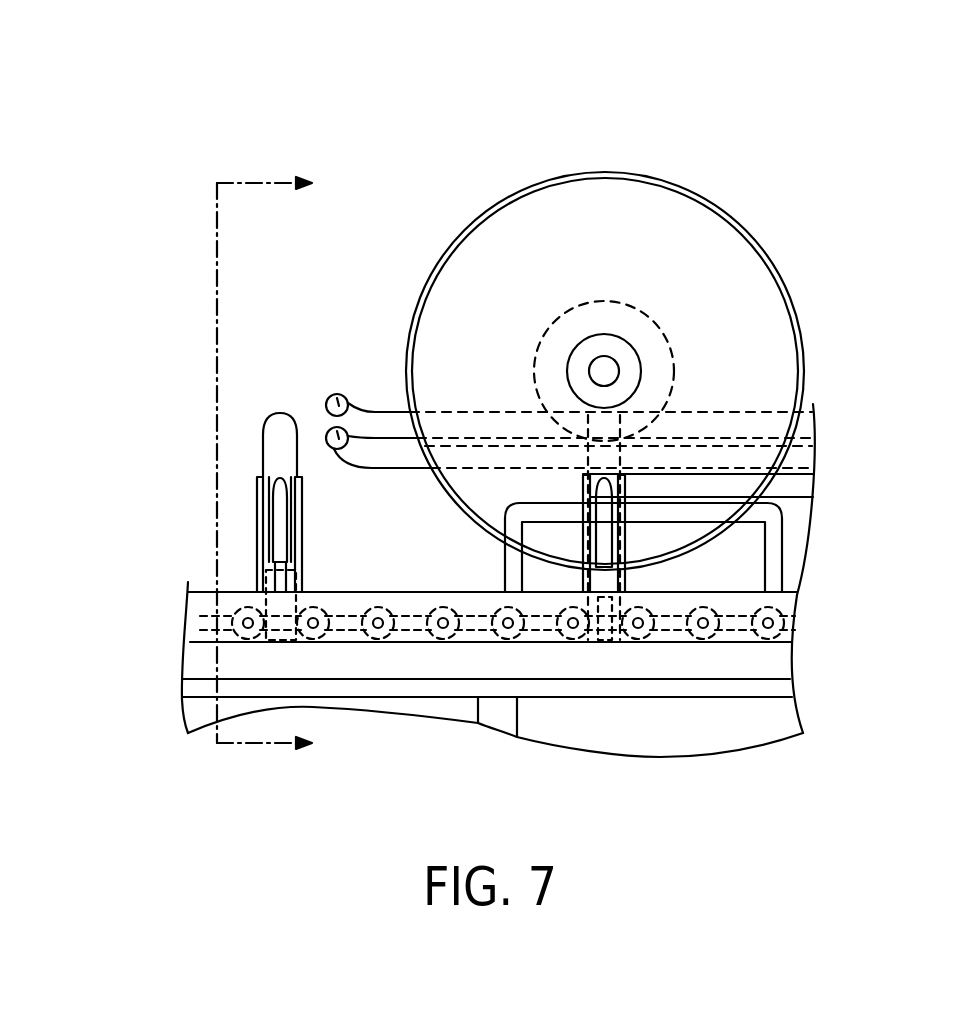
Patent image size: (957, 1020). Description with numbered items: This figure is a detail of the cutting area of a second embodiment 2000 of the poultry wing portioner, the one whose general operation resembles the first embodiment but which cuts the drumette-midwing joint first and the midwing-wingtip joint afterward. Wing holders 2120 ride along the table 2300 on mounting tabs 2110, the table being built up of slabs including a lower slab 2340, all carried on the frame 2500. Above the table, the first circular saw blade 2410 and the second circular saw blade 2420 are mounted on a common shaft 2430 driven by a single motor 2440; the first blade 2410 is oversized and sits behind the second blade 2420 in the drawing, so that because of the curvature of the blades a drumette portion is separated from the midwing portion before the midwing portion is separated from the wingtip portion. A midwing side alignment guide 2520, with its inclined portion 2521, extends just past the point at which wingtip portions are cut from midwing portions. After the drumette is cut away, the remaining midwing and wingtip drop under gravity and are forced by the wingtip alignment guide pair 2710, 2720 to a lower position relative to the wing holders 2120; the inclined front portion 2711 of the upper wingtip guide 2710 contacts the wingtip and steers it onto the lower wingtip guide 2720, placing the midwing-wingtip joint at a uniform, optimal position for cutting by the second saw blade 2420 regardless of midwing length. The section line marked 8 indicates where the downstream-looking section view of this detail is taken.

The second embodiment of the poultry wing portioner 2000 is at (380, 118).
The section line 8 is at (276, 462).
The first circular saw blade 2410 is at (530, 183).
The second circular saw blade 2420 is at (606, 173).
The shaft for motor 2430 is at (619, 372).
The motor 2440 is at (655, 322).
The midwing side alignment guide 2520 is at (398, 450).
The inclined portion of midwing side alignment guide 2521 is at (328, 396).
The upper wingtip alignment guide 2710 is at (807, 488).
The inclined portion of upper wingtip alignment guide 2711 is at (583, 500).
The lower wingtip alignment guide 2720 is at (510, 518).
The wing holder 2120 is at (256, 488).
The mounting tab 2110 is at (260, 573).
The table 2300 is at (200, 602).
The lower slab of table 2340 is at (368, 663).
The frame 2500 is at (658, 688).